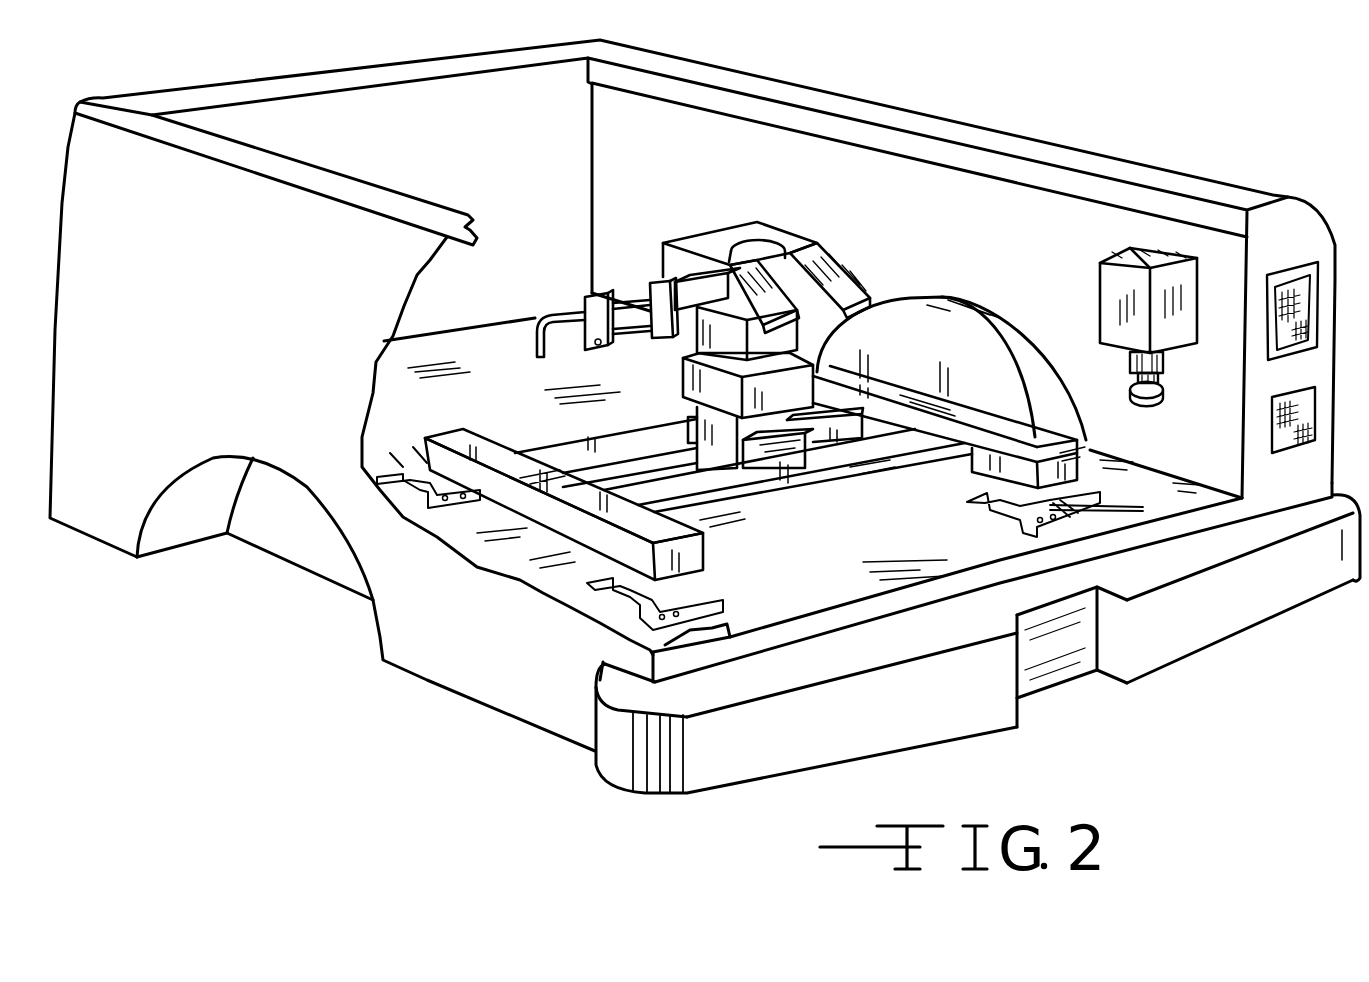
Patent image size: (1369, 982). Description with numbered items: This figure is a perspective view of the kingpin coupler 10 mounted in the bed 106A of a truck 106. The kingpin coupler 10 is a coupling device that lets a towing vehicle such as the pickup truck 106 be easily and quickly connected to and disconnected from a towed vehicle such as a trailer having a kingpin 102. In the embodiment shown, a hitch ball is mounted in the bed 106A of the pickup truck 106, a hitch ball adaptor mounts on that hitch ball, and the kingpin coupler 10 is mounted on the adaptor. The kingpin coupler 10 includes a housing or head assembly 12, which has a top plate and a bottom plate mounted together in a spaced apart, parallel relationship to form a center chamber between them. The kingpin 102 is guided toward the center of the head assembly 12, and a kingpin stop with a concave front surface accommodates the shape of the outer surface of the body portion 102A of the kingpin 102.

The kingpin coupler 10 is at (788, 226).
The head assembly 12 is at (845, 258).
The kingpin 102 is at (1163, 390).
The body portion 102A is at (1133, 373).
The truck 106 is at (1000, 121).
The bed 106A is at (837, 587).